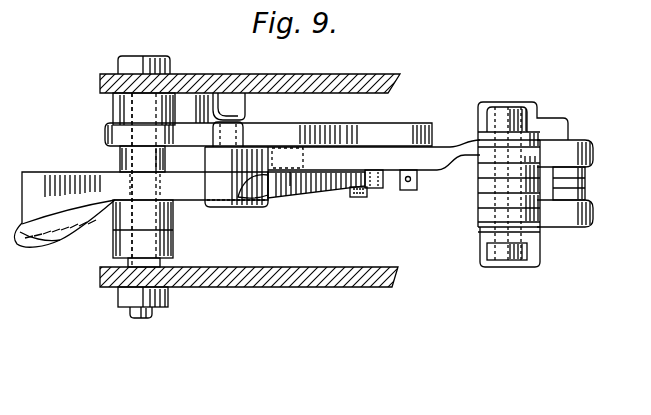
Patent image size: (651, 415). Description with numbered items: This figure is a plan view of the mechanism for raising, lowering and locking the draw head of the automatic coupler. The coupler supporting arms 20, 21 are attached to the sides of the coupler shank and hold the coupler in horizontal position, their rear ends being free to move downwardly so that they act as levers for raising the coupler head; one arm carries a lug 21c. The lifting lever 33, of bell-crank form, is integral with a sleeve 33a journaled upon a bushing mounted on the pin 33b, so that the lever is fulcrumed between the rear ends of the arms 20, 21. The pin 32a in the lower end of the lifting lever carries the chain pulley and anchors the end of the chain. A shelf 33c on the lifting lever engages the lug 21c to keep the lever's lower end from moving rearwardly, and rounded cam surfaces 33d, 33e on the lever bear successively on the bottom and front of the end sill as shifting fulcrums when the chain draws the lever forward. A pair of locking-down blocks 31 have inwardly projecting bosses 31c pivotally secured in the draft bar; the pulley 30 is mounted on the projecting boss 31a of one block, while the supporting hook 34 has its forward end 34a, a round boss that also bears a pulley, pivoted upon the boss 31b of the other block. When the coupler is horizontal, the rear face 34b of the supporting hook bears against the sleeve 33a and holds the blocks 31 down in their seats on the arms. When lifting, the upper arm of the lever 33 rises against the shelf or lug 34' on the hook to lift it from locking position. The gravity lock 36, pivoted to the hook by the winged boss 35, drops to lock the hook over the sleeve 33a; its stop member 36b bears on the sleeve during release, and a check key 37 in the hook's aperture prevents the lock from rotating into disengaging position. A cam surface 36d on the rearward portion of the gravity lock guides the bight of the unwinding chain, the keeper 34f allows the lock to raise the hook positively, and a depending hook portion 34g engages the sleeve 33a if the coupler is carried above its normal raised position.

The coupler supporting arm 20 is at (312, 278).
The coupler supporting arm 21 is at (249, 88).
The lug 21c is at (224, 103).
The pulley 30 is at (490, 183).
The locking-down block 31 is at (490, 127).
The projecting boss 31a is at (488, 232).
The projecting boss 31b is at (492, 144).
The inwardly projecting boss 31c is at (572, 187).
The pin 32a is at (157, 262).
The lifting lever 33 is at (268, 161).
The sleeve 33a is at (166, 235).
The pin 33b is at (152, 313).
The shelf 33c is at (200, 102).
The rounded cam surface 33d is at (316, 132).
The rounded cam surface 33e is at (423, 130).
The supporting hook 34 is at (342, 155).
The shelf or lug 34' is at (256, 123).
The forward end 34a is at (490, 168).
The rear face 34b is at (163, 156).
The keeper 34f is at (233, 208).
The depending hook portion 34g is at (352, 197).
The boss 35 is at (293, 174).
The gravity lock 36 is at (141, 209).
The stop member 36b is at (358, 185).
The cam surface 36d is at (48, 247).
The check key 37 is at (380, 168).